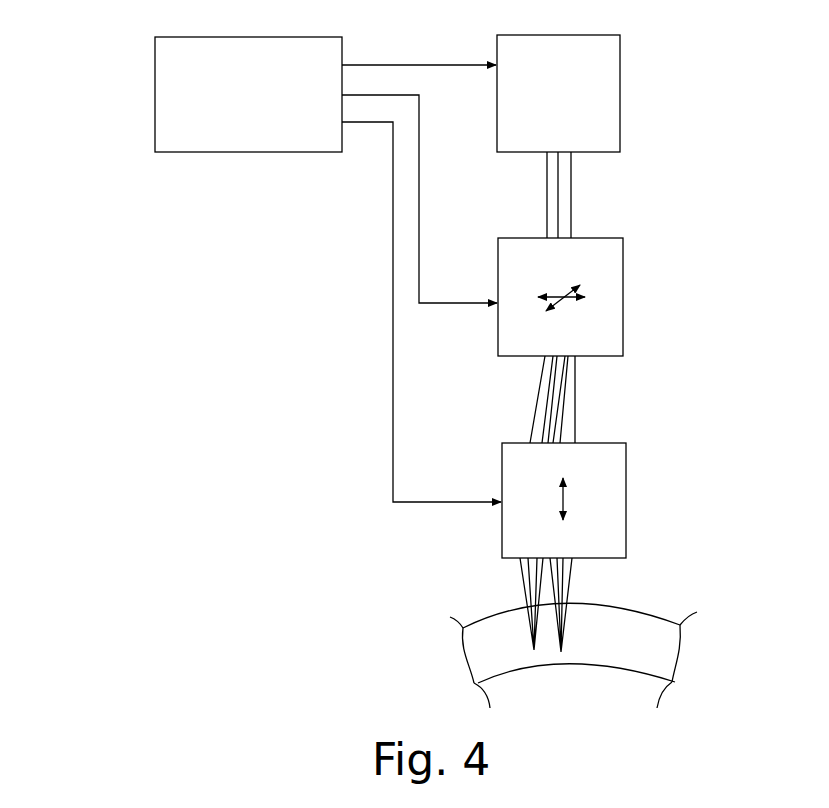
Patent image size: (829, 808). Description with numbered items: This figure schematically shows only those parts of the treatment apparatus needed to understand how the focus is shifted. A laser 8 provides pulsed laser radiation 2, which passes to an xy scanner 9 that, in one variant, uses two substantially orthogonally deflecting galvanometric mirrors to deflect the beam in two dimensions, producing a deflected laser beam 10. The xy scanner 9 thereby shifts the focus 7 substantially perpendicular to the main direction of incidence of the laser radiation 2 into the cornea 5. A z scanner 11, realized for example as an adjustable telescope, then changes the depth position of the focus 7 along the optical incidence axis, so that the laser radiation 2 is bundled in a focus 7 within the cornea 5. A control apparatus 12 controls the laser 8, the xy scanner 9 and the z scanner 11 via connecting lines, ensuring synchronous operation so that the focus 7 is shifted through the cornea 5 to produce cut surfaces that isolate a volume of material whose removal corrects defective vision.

The control apparatus 12 is at (155, 92).
The laser 8 is at (620, 97).
The laser radiation 2 is at (571, 218).
The xy scanner 9 is at (623, 295).
The deflected laser beam 10 is at (553, 408).
The z scanner 11 is at (626, 503).
The cornea 5 is at (647, 633).
The focus 7 is at (533, 648).